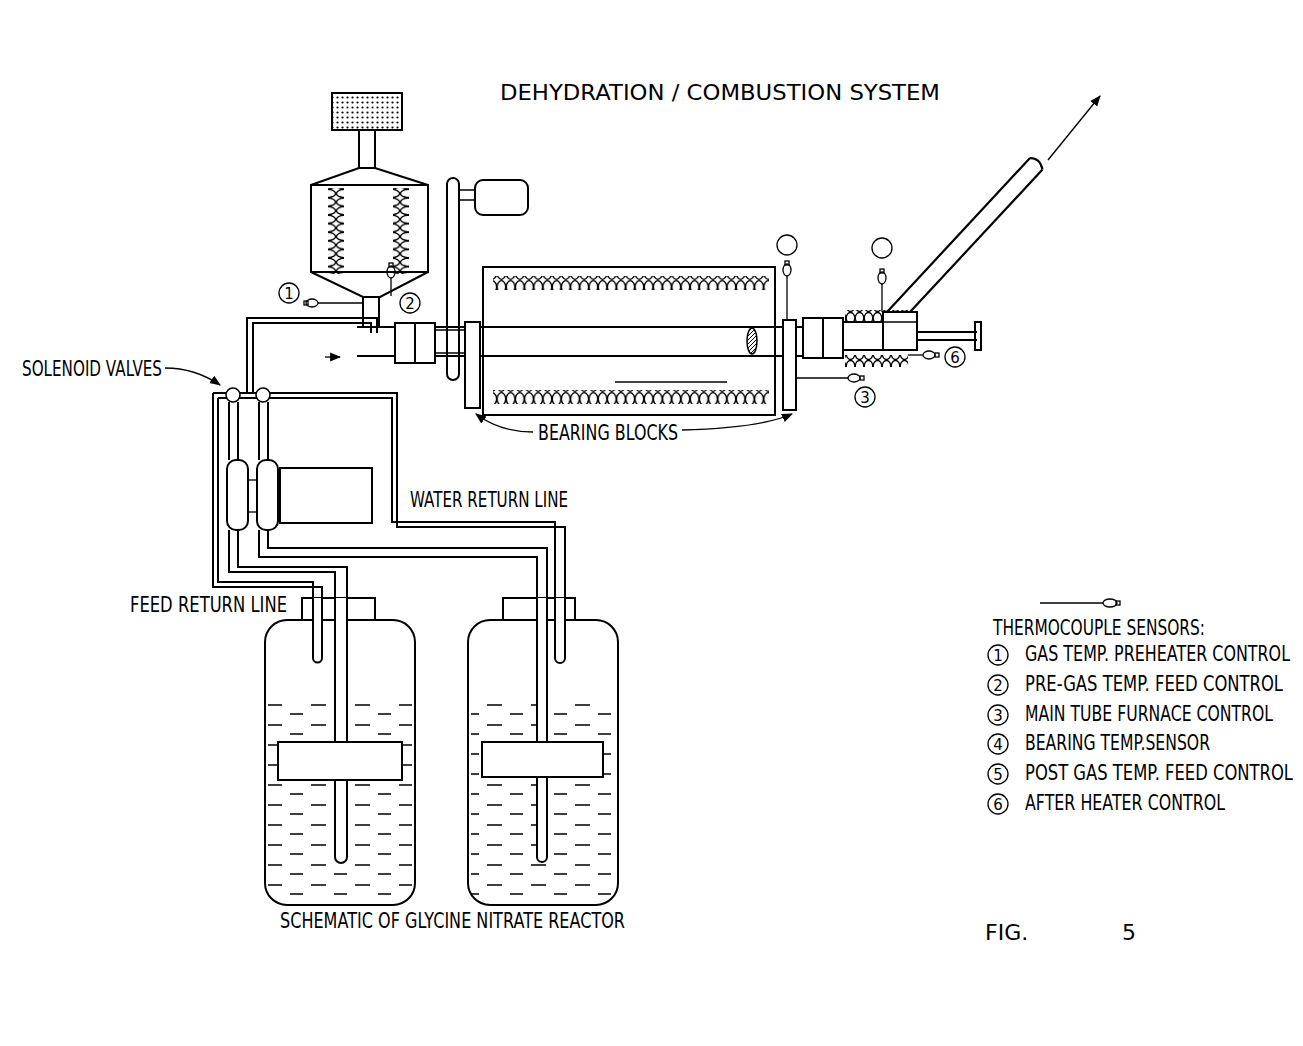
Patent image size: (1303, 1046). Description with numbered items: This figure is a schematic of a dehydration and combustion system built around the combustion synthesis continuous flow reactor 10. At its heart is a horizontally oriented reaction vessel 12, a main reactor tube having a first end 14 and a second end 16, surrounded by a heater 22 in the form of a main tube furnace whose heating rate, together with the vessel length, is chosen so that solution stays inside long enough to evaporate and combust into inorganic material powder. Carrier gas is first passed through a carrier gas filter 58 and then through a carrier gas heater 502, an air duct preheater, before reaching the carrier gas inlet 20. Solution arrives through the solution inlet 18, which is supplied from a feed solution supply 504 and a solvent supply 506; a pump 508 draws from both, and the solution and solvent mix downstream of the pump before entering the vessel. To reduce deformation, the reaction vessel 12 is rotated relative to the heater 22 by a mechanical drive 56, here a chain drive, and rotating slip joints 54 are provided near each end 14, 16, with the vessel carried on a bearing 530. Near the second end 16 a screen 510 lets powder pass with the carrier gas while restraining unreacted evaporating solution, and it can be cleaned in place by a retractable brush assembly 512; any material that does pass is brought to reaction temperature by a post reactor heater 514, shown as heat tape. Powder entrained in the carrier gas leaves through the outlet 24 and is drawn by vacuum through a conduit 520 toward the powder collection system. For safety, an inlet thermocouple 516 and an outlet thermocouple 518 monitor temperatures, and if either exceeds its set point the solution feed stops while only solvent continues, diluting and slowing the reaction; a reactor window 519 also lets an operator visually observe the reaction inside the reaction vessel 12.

The reactor 10 is at (666, 228).
The reaction vessel 12 is at (508, 327).
The first end 14 is at (423, 376).
The second end 16 is at (800, 270).
The solution inlet 18 is at (360, 333).
The carrier gas inlet 20 is at (357, 316).
The heater 22 is at (340, 208).
The outlet 24 is at (863, 330).
The rotating slip joint 54 is at (392, 377).
The mechanical drive 56 is at (473, 172).
The carrier gas filter 58 is at (403, 105).
The carrier gas heater 502 is at (310, 197).
The feed solution supply 504 is at (252, 771).
The solvent supply 506 is at (633, 766).
The pump 508 is at (283, 468).
The screen 510 is at (754, 312).
The retractable brush assembly 512 is at (975, 365).
The post reactor heater 514 is at (862, 312).
The inlet thermocouple 516 is at (355, 296).
The outlet thermocouple 518 is at (892, 272).
The reactor window 519 is at (253, 362).
The conduit 520 is at (993, 252).
The bearing 530 is at (800, 398).